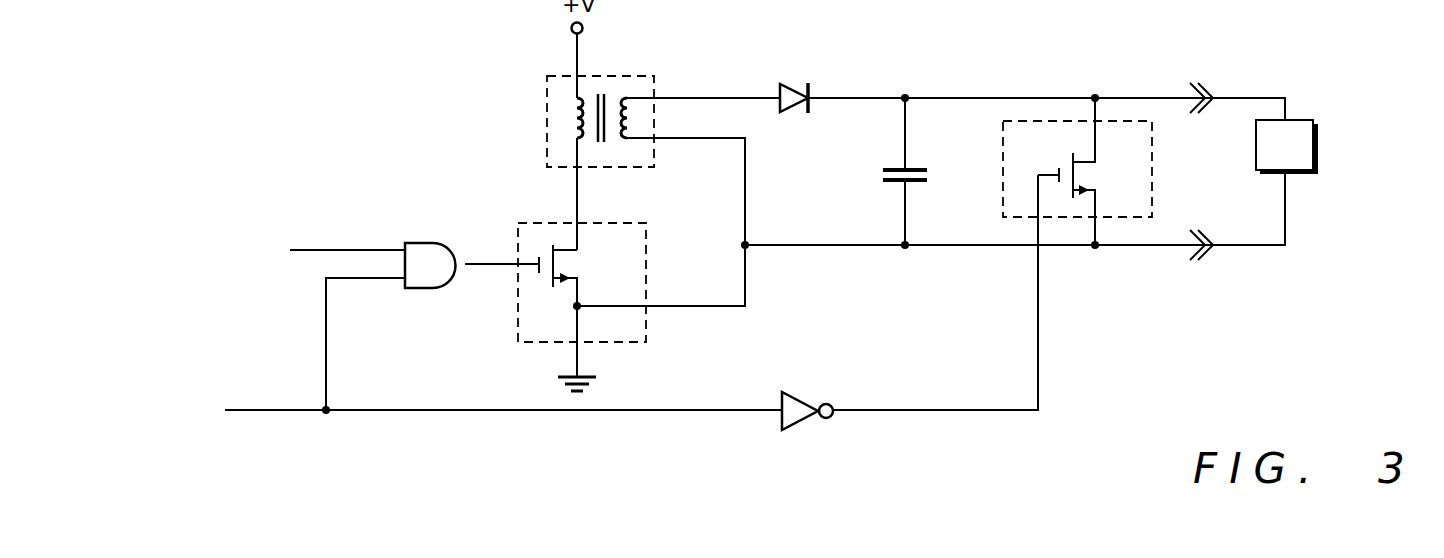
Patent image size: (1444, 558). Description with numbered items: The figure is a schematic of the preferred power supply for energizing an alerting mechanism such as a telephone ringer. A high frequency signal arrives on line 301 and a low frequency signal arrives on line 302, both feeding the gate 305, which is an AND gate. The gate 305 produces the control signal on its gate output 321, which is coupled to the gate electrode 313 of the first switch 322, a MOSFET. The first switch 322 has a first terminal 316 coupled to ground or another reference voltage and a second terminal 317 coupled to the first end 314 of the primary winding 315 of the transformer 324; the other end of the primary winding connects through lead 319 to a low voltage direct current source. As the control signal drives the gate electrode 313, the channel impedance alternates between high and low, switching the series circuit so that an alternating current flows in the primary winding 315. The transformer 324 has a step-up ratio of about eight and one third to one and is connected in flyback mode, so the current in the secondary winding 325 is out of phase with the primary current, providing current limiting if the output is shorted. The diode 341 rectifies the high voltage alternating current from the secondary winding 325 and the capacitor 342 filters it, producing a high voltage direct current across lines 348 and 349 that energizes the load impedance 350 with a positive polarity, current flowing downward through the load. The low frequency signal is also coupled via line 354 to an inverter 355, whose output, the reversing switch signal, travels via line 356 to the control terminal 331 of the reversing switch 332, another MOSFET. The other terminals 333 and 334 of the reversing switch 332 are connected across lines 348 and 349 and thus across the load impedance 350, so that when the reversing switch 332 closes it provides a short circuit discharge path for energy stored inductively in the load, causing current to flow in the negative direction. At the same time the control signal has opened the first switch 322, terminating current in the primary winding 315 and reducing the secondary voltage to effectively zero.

The line 301 is at (373, 249).
The line 302 is at (327, 335).
The gate 305 is at (446, 243).
The gate output 321 is at (467, 262).
The gate electrode 313 is at (530, 268).
The first switch 322 is at (645, 223).
The second terminal 317 is at (577, 248).
The first terminal 316 is at (579, 291).
The first end of the primary winding 314 is at (580, 152).
The primary winding 315 is at (576, 128).
The supply lead 319 is at (580, 72).
The transformer 324 is at (548, 78).
The secondary winding 325 is at (627, 125).
The diode 341 is at (800, 88).
The capacitor 342 is at (883, 173).
The line 348 is at (978, 94).
The line 349 is at (1006, 247).
The control terminal 331 is at (1050, 172).
The terminal 333 is at (1096, 163).
The reversing switch 332 is at (1152, 170).
The terminal 334 is at (1097, 232).
The load impedance 350 is at (1300, 119).
The line 354 is at (740, 410).
The inverter 355 is at (836, 406).
The line 356 is at (978, 410).